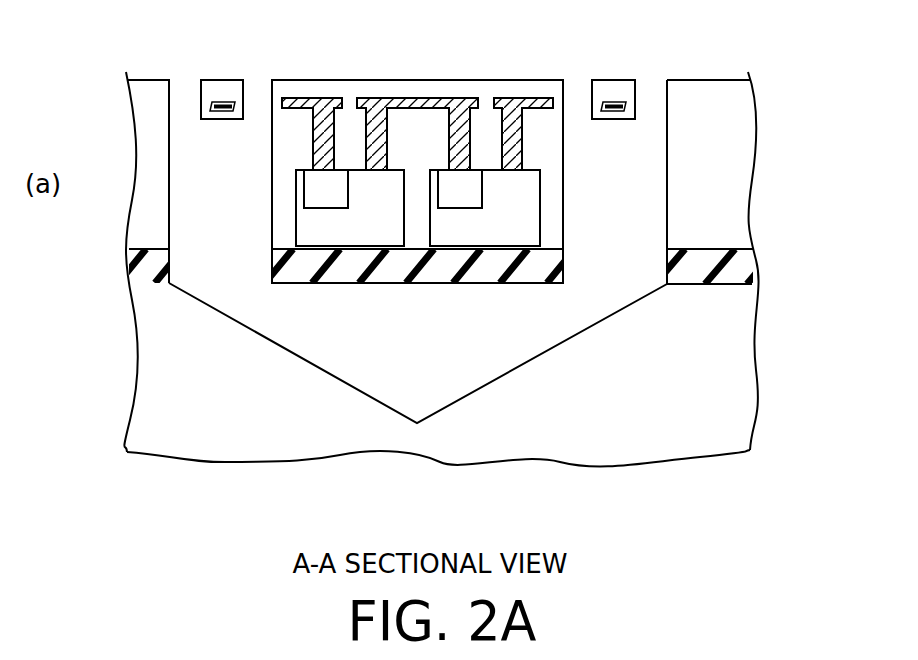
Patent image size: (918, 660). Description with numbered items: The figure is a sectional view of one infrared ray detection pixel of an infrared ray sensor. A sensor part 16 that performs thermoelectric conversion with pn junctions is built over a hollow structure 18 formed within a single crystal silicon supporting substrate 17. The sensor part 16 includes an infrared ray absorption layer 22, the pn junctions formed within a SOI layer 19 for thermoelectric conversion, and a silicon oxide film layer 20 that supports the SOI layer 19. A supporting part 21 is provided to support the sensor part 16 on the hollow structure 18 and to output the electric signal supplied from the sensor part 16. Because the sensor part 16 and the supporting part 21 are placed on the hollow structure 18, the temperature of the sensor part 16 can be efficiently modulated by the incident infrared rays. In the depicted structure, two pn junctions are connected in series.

The sensor part 16 is at (455, 147).
The single crystal silicon supporting substrate 17 is at (658, 463).
The hollow structure 18 is at (482, 365).
The SOI layer 19 is at (540, 213).
The silicon oxide film layer 20 is at (563, 265).
The supporting part 21 is at (222, 80).
The infrared ray absorption layer 22 is at (563, 80).